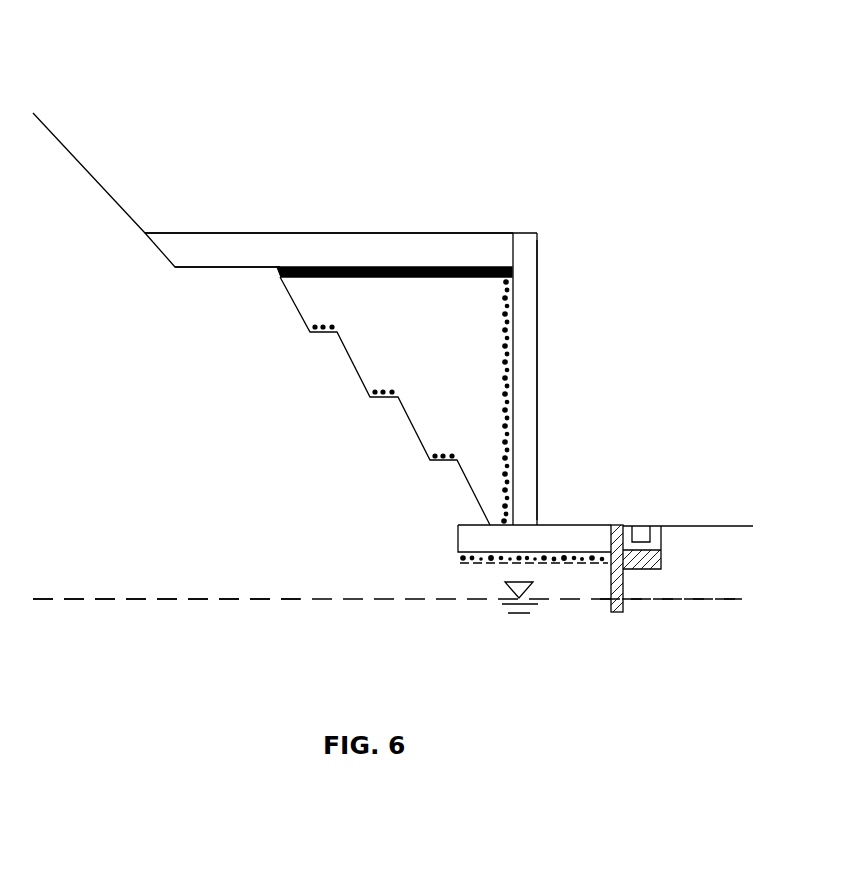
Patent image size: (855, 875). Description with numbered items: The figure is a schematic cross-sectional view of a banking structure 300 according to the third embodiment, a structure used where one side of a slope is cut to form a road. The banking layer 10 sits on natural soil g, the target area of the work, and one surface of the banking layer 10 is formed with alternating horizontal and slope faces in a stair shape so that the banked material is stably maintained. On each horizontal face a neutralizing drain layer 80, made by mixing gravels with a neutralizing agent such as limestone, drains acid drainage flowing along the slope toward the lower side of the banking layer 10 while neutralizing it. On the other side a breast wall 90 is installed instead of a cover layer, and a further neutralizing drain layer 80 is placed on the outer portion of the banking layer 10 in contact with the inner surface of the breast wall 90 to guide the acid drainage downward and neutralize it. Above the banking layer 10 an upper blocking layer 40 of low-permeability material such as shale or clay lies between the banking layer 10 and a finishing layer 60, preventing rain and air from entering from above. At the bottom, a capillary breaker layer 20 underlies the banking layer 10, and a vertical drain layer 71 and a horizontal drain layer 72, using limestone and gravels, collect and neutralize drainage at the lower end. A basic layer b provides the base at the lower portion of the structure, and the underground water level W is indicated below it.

The banking structure 300 is at (466, 80).
The banking layer 10 is at (473, 365).
The capillary breaker layer 20 is at (483, 565).
The upper blocking layer 40 is at (320, 267).
The finishing layer 60 is at (388, 250).
The vertical drain layer 71 is at (608, 588).
The horizontal drain layer 72 is at (661, 557).
The neutralizing drain layer 80 is at (512, 310).
The breast wall 90 is at (538, 450).
The underground water level W is at (242, 598).
The natural soil g is at (156, 617).
The basic layer b is at (686, 578).